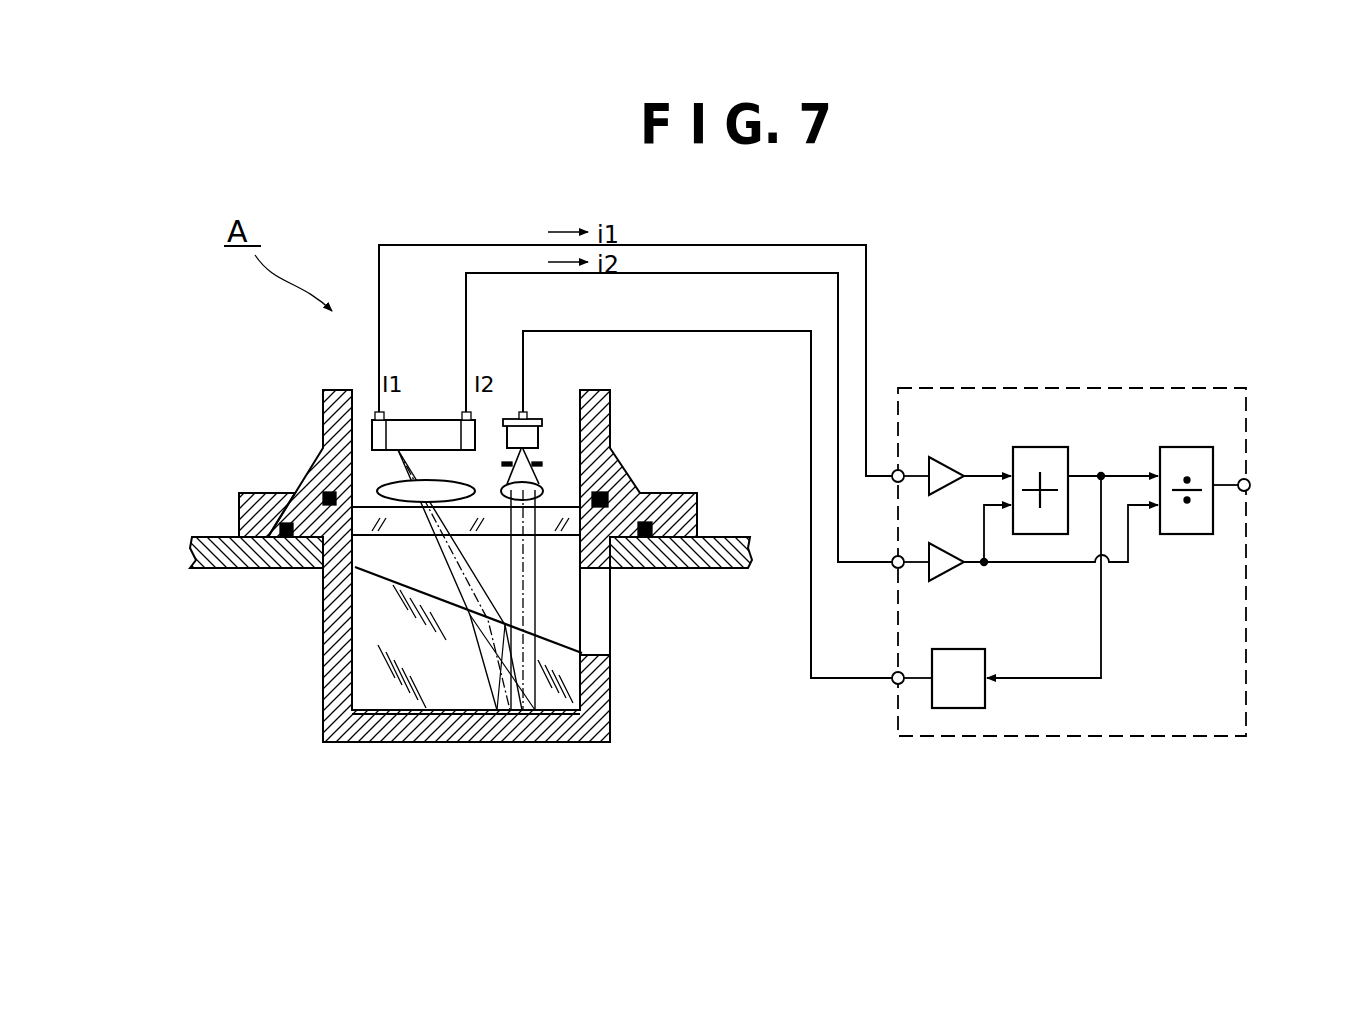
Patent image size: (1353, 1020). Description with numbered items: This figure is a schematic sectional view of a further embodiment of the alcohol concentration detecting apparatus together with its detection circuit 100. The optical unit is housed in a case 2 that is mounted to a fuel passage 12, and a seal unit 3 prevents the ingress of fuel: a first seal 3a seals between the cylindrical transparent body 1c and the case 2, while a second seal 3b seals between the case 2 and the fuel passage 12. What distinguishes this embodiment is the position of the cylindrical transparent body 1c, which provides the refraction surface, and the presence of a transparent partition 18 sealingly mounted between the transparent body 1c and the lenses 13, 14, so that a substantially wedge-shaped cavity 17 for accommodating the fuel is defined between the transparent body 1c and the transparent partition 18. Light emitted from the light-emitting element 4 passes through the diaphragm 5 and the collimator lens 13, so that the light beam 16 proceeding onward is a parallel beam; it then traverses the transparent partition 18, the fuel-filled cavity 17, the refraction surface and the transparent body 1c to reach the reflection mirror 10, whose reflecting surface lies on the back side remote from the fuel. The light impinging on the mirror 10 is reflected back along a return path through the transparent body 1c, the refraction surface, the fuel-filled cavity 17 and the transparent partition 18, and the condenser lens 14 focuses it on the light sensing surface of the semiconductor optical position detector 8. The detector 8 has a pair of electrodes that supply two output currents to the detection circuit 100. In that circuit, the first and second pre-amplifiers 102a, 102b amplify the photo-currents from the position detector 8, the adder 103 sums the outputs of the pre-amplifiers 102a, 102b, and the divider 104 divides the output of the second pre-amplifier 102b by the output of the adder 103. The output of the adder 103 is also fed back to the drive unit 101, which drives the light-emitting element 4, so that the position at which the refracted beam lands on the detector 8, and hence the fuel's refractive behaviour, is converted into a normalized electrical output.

The cylindrical transparent body 1c is at (378, 667).
The case 2 is at (670, 524).
The seal unit 3 is at (246, 484).
The first seal 3a is at (304, 478).
The second seal 3b is at (283, 523).
The light-emitting element 4 is at (530, 420).
The diaphragm 5 is at (540, 463).
The semiconductor optical position detector 8 is at (377, 414).
The reflection mirror 10 is at (378, 742).
The fuel passage 12 is at (595, 607).
The collimator lens 13 is at (544, 488).
The condenser lens 14 is at (380, 486).
The light beam 16 is at (540, 571).
The wedge-shaped cavity 17 is at (567, 624).
The transparent partition 18 is at (597, 518).
The detection circuit 100 is at (1247, 692).
The drive unit 101 is at (957, 708).
The first pre-amplifier 102a is at (943, 458).
The second pre-amplifier 102b is at (943, 557).
The adder 103 is at (1048, 447).
The divider 104 is at (1186, 447).